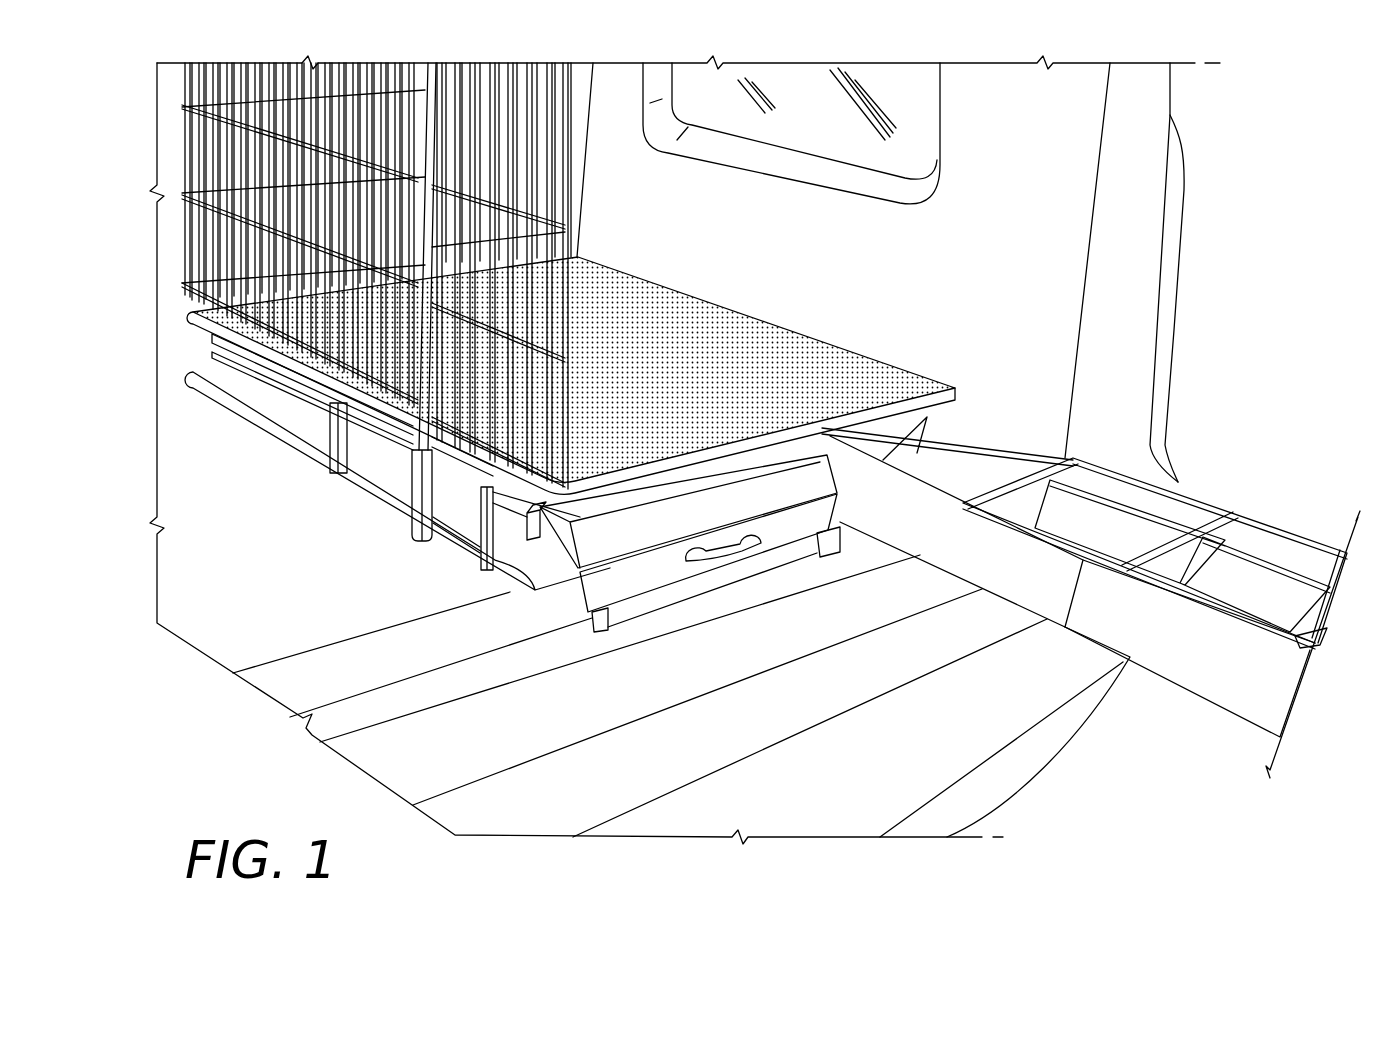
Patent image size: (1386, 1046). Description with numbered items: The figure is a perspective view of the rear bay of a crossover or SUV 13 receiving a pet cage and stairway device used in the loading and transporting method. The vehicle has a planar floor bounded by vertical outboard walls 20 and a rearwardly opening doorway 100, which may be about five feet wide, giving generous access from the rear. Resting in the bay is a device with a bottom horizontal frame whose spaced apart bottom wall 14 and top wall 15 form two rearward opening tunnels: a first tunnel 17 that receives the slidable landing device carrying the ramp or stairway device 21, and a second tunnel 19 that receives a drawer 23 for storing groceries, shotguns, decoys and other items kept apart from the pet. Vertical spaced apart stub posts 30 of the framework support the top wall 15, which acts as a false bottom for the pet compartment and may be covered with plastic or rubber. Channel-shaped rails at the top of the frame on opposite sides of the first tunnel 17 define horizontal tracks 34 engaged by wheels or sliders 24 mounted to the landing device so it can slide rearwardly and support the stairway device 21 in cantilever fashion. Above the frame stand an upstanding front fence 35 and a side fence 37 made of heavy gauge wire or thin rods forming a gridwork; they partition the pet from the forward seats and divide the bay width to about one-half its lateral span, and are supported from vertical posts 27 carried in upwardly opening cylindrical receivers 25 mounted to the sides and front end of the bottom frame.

The SUV 13 is at (1184, 322).
The bottom wall 14 is at (458, 560).
The top wall 15 is at (826, 370).
The first tunnel 17 is at (690, 479).
The second tunnel 19 is at (902, 433).
The vertical outboard walls 20 is at (962, 288).
The stairway device 21 is at (656, 590).
The drawer 23 is at (1264, 512).
The sliders 24 is at (376, 425).
The cylindrical receivers 25 is at (412, 483).
The vertical posts 27 is at (398, 428).
The stub posts 30 is at (347, 433).
The tracks 34 is at (263, 383).
The front fence 35 is at (411, 276).
The side fence 37 is at (576, 290).
The doorway 100 is at (1115, 243).